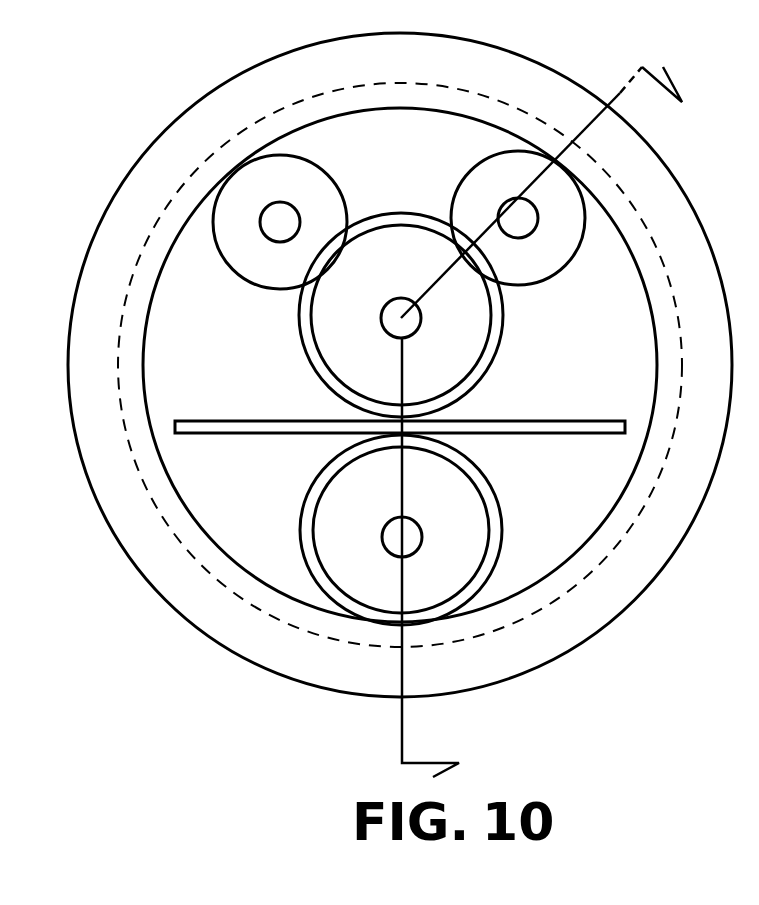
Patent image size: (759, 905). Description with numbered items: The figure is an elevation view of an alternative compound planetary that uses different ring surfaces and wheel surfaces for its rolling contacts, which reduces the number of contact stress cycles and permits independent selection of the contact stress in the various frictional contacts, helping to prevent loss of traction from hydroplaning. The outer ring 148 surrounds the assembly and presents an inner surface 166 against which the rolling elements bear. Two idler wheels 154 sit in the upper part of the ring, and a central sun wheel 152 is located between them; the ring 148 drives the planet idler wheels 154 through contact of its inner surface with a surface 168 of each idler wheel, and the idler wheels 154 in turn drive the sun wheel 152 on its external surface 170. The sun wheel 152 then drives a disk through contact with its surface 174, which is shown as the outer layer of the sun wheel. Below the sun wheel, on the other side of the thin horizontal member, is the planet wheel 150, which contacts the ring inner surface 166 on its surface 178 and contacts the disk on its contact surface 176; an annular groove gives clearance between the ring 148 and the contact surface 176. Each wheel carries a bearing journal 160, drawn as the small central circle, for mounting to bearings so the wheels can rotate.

The ring 148 is at (515, 647).
The planet wheel 150 is at (414, 530).
The sun wheel 152 is at (388, 315).
The idler wheels 154 is at (404, 240).
The bearing journals 160 is at (293, 203).
The inner surface 166 is at (360, 118).
The surface 168 is at (532, 287).
The external surface 170 is at (310, 318).
The surface 174 is at (317, 382).
The contact surface 176 is at (480, 463).
The surface 178 is at (493, 540).